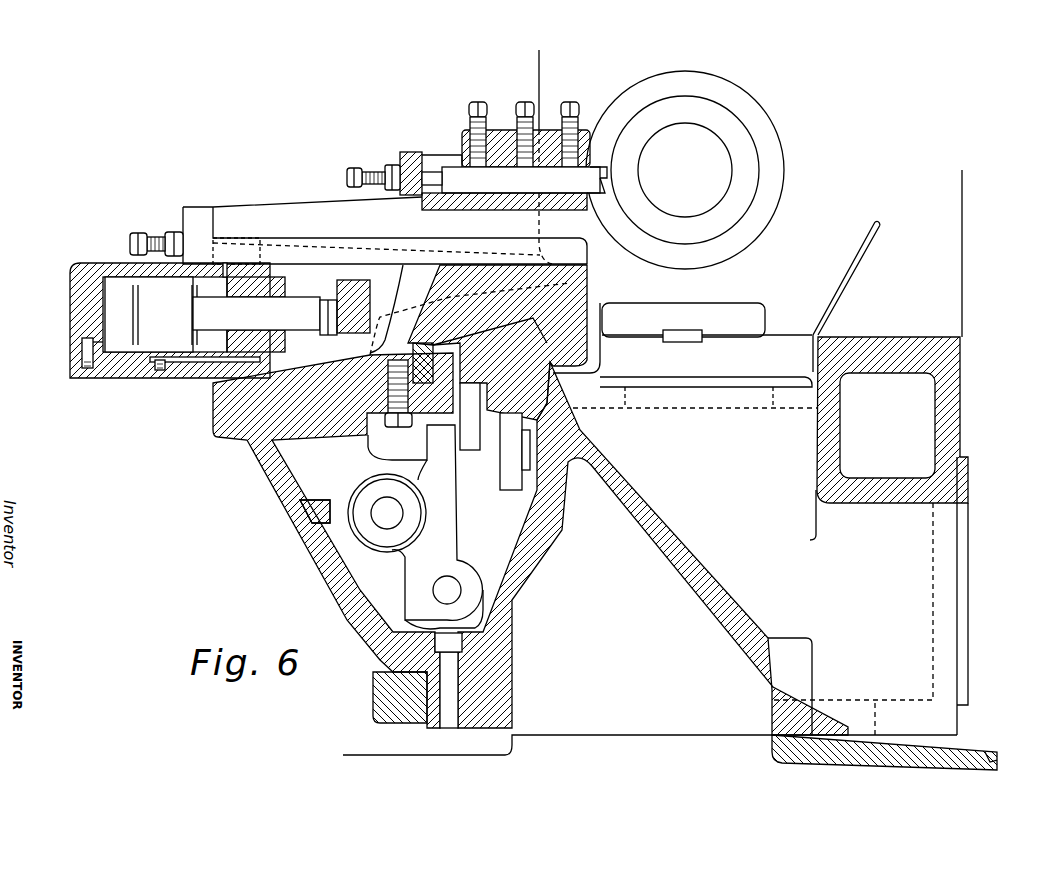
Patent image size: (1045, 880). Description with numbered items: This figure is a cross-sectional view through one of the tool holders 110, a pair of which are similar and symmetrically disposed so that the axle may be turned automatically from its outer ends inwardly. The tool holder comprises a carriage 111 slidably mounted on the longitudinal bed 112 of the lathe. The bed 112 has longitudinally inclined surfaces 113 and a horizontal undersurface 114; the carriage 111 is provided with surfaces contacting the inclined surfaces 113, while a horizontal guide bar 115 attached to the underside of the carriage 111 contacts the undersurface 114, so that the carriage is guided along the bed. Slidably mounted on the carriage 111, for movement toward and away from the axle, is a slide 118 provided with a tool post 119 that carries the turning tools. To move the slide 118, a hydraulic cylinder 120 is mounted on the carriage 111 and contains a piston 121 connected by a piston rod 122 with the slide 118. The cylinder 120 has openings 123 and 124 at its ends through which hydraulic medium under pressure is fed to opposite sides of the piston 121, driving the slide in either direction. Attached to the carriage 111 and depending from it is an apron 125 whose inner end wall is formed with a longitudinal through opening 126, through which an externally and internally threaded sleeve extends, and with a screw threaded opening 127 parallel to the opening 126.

The tool holder 110 is at (321, 160).
The carriage 111 is at (205, 405).
The longitudinal bed 112 is at (562, 388).
The longitudinally inclined surfaces 113 is at (590, 326).
The horizontal undersurface 114 is at (468, 388).
The horizontal guide bar 115 is at (421, 440).
The slide 118 is at (301, 206).
The tool post 119 is at (445, 134).
The hydraulic cylinder 120 is at (68, 368).
The piston 121 is at (148, 296).
The piston rod 122 is at (296, 322).
The opening 123 is at (87, 372).
The opening 124 is at (158, 370).
The apron 125 is at (285, 515).
The longitudinal through opening 126 is at (370, 523).
The screw threaded opening 127 is at (432, 590).